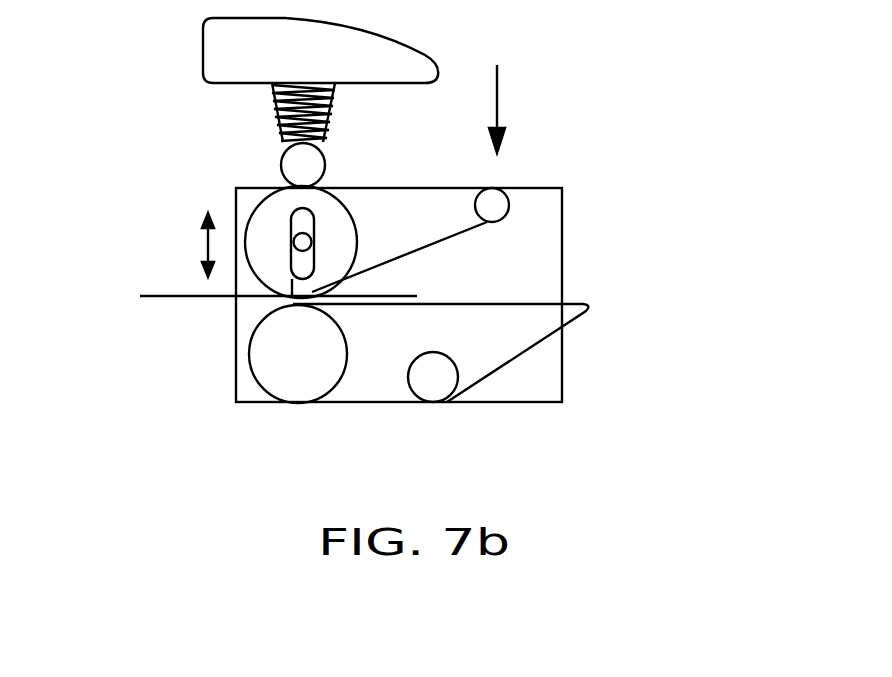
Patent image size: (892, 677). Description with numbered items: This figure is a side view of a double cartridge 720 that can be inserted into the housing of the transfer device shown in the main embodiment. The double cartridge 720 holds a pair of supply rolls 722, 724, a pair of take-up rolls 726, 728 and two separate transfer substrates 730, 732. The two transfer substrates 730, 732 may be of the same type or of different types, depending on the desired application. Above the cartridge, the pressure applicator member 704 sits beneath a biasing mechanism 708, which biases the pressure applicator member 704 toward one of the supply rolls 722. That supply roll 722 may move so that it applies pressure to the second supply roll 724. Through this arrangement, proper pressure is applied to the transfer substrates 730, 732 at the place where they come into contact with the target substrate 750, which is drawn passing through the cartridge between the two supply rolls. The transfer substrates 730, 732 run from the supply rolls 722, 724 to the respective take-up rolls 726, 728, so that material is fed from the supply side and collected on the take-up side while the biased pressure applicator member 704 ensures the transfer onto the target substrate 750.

The pressure applicator member 704 is at (291, 165).
The biasing mechanism 708 is at (329, 115).
The double cartridge 720 is at (593, 213).
The supply roll 722 is at (272, 218).
The supply roll 724 is at (270, 355).
The take-up roll 726 is at (493, 202).
The take-up roll 728 is at (433, 388).
The transfer substrate 730 is at (432, 252).
The transfer substrate 732 is at (515, 358).
The target substrate 750 is at (157, 295).